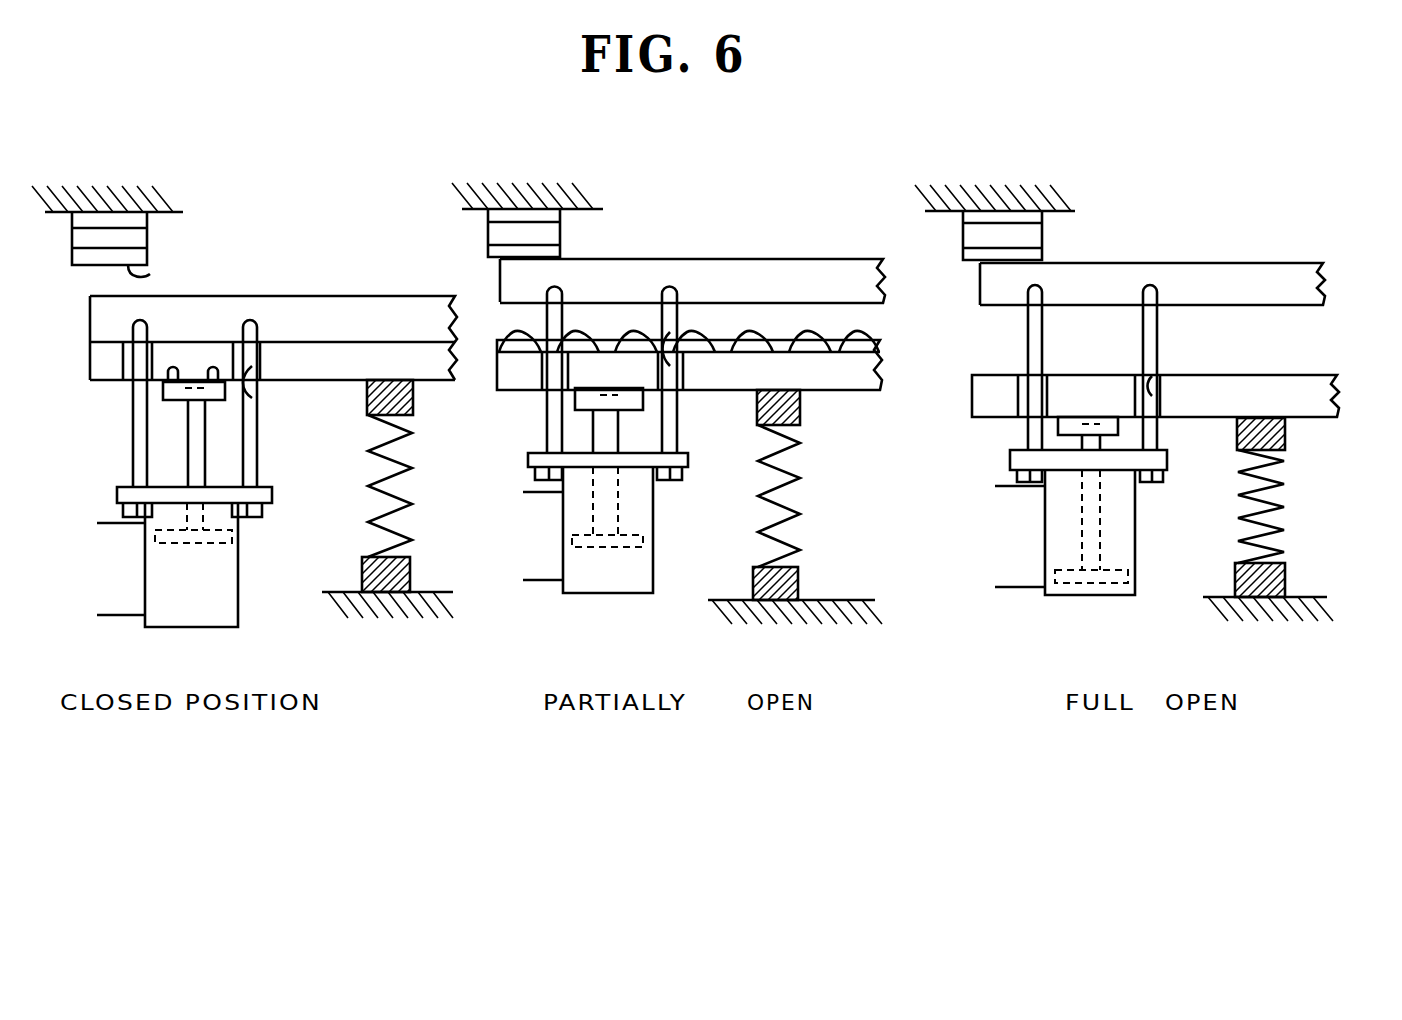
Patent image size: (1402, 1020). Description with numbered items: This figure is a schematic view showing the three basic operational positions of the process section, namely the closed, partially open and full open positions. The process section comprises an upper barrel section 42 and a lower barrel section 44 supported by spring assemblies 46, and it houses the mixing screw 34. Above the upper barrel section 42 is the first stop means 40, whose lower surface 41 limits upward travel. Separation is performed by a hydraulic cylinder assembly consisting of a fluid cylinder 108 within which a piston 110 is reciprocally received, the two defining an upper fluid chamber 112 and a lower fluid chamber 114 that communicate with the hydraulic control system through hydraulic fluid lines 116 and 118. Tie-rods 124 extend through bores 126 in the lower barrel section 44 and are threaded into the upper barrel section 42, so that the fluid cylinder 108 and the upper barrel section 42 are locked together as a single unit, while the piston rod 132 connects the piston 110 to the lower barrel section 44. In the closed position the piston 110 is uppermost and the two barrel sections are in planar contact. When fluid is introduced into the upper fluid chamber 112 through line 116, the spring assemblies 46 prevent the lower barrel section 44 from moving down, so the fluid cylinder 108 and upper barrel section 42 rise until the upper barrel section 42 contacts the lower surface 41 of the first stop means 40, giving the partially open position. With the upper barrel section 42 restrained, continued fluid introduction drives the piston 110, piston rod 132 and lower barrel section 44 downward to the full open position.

The mixing screw 34 is at (868, 346).
The first stop means 40 is at (135, 240).
The lower surface of first stop means 41 is at (150, 274).
The upper barrel section 42 is at (372, 333).
The lower barrel section 44 is at (372, 371).
The spring assembly 46 is at (419, 504).
The fluid cylinder 108 is at (238, 578).
The piston 110 is at (186, 547).
The upper fluid chamber 112 is at (213, 518).
The lower fluid chamber 114 is at (208, 612).
The hydraulic fluid line 116 is at (115, 525).
The hydraulic fluid line 118 is at (122, 615).
The tie-rods 124 is at (135, 432).
The bores 126 is at (254, 396).
The piston rod 132 is at (205, 467).